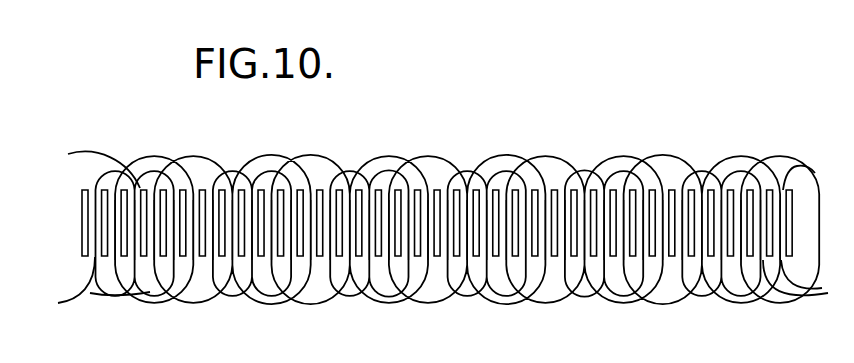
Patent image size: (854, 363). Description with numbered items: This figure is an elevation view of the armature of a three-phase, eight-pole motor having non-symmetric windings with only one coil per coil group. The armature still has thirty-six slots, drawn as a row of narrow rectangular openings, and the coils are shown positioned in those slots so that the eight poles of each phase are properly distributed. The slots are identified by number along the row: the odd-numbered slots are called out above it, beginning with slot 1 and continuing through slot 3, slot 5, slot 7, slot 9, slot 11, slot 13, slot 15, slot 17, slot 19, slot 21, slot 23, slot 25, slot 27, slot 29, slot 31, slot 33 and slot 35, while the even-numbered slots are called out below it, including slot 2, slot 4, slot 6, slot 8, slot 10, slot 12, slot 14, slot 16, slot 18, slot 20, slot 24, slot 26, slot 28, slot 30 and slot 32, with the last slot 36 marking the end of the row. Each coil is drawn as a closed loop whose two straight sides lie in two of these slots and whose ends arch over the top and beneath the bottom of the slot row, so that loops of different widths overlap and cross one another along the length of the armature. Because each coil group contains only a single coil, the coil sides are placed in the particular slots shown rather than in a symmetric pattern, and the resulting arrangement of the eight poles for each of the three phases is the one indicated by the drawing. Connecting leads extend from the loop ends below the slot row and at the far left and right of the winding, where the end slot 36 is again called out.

The slot 1 is at (115, 280).
The slot 2 is at (348, 281).
The slot 3 is at (237, 283).
The slot 4 is at (212, 283).
The slot 5 is at (447, 286).
The slot 6 is at (333, 286).
The slot 7 is at (234, 191).
The slot 8 is at (258, 258).
The slot 9 is at (272, 191).
The slot 10 is at (289, 258).
The slot 11 is at (308, 191).
The slot 12 is at (327, 258).
The slot 13 is at (350, 191).
The slot 14 is at (370, 258).
The slot 15 is at (389, 191).
The slot 16 is at (406, 258).
The slot 17 is at (428, 191).
The slot 18 is at (492, 258).
The slot 19 is at (467, 191).
The slot 20 is at (530, 258).
The slot 21 is at (506, 191).
The slot 23 is at (545, 191).
The slot 24 is at (572, 258).
The slot 25 is at (584, 191).
The slot 26 is at (614, 258).
The slot 27 is at (624, 191).
The slot 28 is at (660, 258).
The slot 29 is at (678, 191).
The slot 30 is at (698, 258).
The slot 31 is at (712, 191).
The slot 32 is at (727, 258).
The slot 33 is at (739, 191).
The slot 35 is at (778, 191).
The slot 36 is at (758, 258).